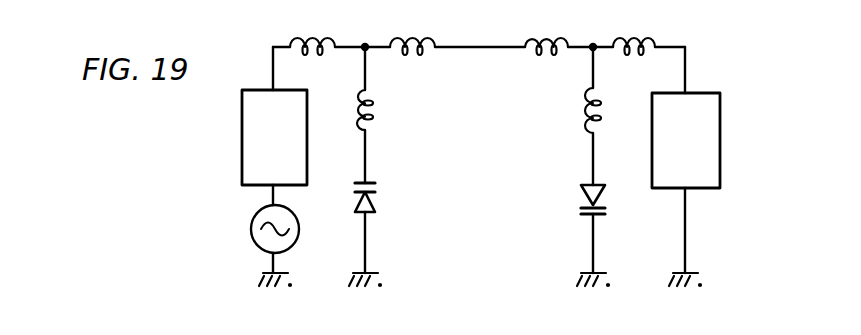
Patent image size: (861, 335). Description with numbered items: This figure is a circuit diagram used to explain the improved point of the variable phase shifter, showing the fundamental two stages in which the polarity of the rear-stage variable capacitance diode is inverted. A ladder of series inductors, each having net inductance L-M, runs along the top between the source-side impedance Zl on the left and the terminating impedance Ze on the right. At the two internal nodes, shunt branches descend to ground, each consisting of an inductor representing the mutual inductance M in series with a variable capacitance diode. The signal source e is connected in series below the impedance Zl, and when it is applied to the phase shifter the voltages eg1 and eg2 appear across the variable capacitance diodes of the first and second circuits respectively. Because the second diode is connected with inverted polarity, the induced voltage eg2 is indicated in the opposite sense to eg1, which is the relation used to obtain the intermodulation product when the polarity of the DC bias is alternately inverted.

The inductance L minus mutual inductance M L-M is at (471, 31).
The mutual inductance M is at (491, 110).
The source-side impedance Zl is at (274, 137).
The terminating impedance Ze is at (686, 183).
The signal source e is at (284, 229).
The voltage across the first variable capacitance diode eg1 is at (391, 173).
The voltage across the second variable capacitance diode eg2 is at (572, 162).